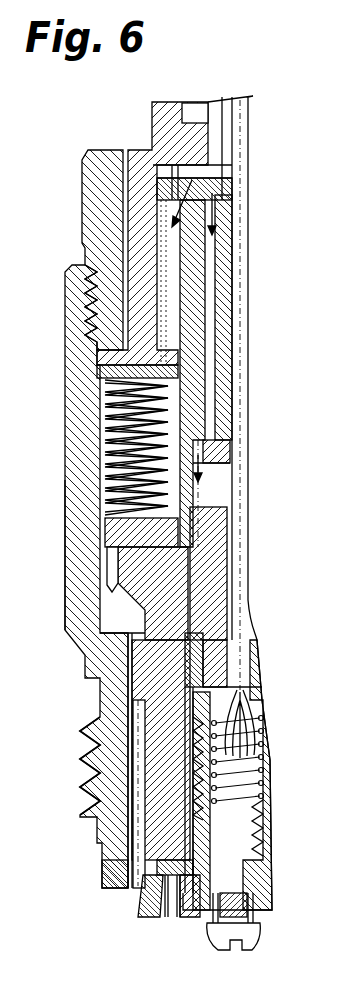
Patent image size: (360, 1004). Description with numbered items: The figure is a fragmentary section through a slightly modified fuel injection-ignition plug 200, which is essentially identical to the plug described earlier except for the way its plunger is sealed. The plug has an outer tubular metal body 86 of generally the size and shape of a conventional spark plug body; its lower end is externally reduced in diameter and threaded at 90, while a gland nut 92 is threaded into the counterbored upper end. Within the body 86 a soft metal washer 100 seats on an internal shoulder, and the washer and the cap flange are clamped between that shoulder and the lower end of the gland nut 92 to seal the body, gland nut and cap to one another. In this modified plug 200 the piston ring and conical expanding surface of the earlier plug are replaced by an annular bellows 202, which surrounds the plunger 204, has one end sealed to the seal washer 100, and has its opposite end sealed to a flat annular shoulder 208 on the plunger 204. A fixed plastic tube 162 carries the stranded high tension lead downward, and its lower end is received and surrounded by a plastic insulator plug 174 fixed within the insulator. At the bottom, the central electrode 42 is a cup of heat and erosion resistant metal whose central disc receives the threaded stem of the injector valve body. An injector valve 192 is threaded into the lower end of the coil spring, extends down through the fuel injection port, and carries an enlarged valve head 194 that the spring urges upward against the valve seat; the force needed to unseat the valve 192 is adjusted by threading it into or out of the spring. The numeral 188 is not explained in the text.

The central electrode 42 is at (140, 908).
The outer tubular metal body 86 is at (60, 480).
The external threads 90 is at (80, 815).
The gland nut 92 is at (75, 208).
The soft metal washer 100 is at (97, 370).
The fixed plastic tube 162 is at (238, 581).
The insulator plug 174 is at (210, 613).
The lower ring 188 is at (103, 882).
The injector valve 192 is at (222, 946).
The valve head 194 is at (205, 936).
The modified fuel injection-ignition plug 200 is at (58, 548).
The annular bellows 202 is at (115, 420).
The plunger 204 is at (158, 690).
The flat annular shoulder 208 is at (107, 568).